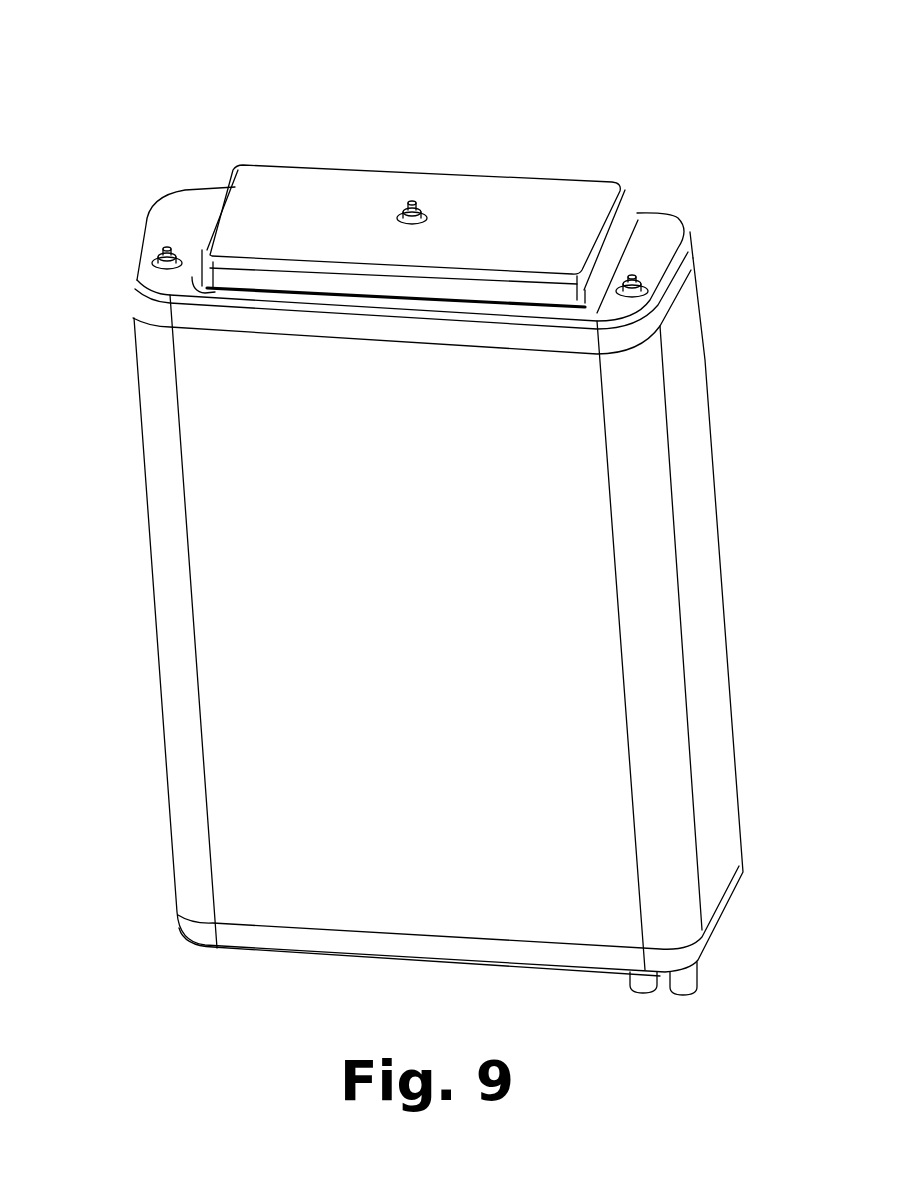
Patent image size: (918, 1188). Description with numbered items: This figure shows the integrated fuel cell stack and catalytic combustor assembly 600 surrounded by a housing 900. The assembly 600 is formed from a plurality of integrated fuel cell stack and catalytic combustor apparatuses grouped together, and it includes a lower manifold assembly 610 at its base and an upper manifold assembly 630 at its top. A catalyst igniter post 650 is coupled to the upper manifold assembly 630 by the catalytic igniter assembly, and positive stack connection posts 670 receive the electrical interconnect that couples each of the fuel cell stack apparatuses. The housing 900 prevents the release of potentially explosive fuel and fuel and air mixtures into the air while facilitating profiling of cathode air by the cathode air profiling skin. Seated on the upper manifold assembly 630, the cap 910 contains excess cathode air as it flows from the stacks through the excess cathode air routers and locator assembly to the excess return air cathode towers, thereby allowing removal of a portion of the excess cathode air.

The integrated fuel cell stack and catalytic combustor assembly 600 is at (437, 498).
The lower manifold assembly 610 is at (747, 922).
The upper manifold assembly 630 is at (108, 307).
The catalyst igniter post 650 is at (422, 205).
The positive stack connection posts 670 is at (180, 247).
The housing 900 is at (680, 613).
The cap 910 is at (300, 188).